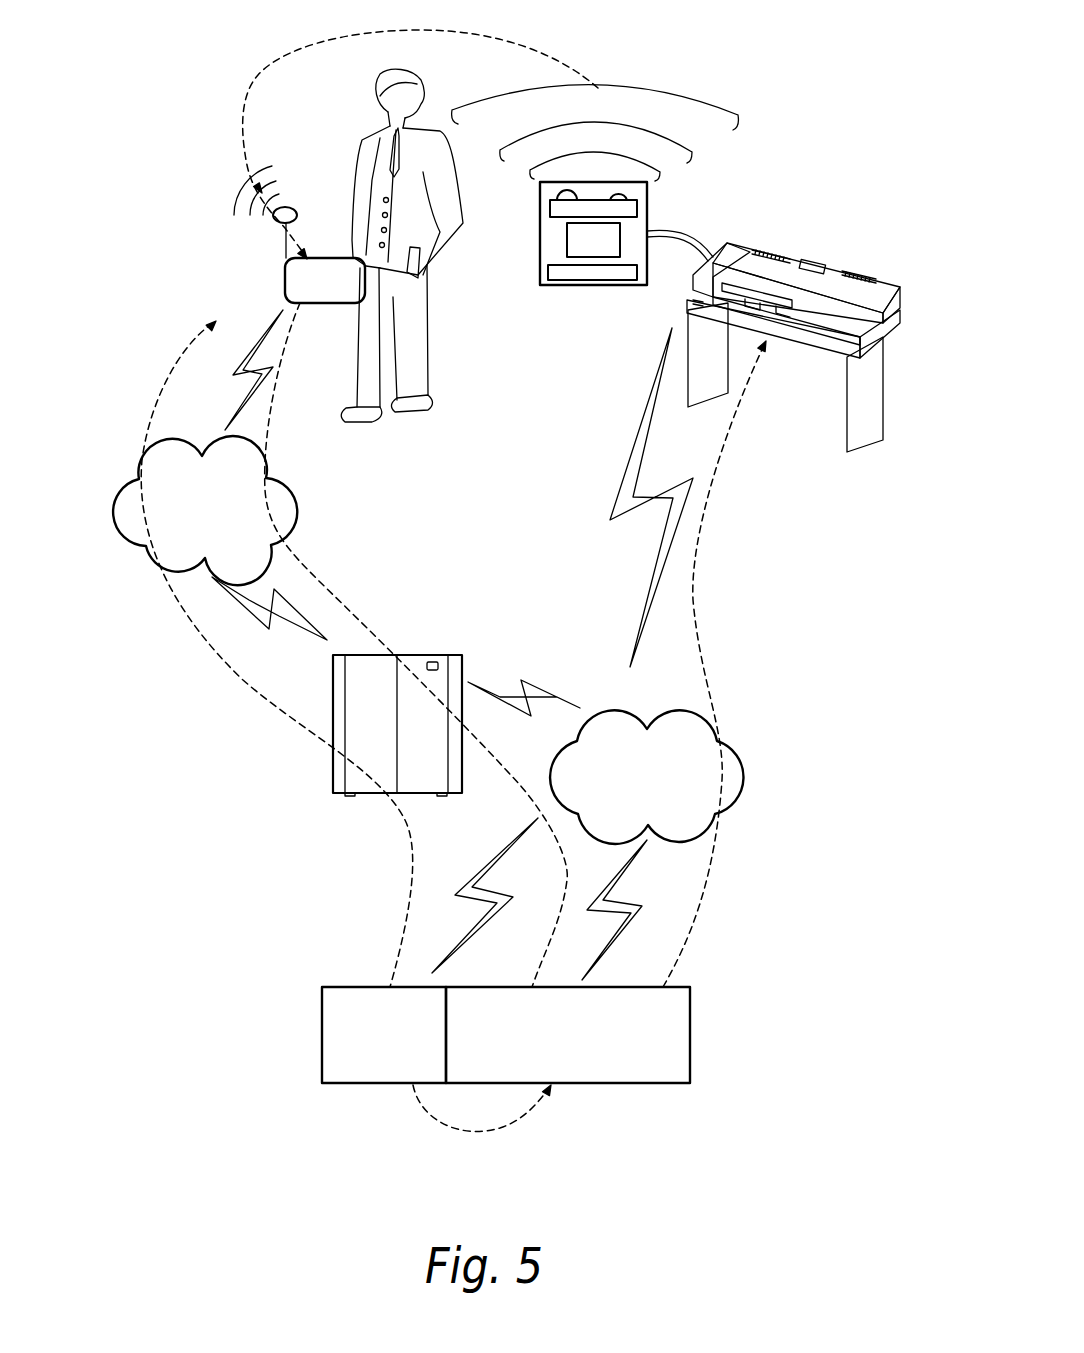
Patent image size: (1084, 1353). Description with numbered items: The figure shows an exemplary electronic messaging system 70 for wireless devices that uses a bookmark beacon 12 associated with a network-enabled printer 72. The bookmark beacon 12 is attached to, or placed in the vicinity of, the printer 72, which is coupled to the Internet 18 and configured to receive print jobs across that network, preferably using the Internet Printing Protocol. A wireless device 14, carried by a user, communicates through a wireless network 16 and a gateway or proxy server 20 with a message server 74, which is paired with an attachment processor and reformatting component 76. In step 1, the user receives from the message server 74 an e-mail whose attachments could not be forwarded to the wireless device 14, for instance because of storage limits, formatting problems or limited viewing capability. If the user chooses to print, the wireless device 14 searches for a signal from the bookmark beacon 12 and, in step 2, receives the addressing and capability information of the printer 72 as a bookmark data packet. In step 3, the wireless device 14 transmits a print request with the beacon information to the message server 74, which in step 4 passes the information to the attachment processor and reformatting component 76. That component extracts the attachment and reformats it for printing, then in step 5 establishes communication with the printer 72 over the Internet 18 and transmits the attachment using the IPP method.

The electronic messaging system 70 is at (803, 86).
The bookmark beacon 12 is at (593, 285).
The wireless device 14 is at (285, 280).
The wireless network 16 is at (138, 467).
The Internet 18 is at (745, 776).
The gateway or proxy server 20 is at (431, 655).
The network-enabled printer 72 is at (880, 290).
The message server 74 is at (355, 987).
The attachment processor and reformatting component 76 is at (690, 1040).
The step 1 is at (276, 654).
The step 2 is at (395, 144).
The step 3 is at (416, 645).
The step 4 is at (482, 1135).
The step 5 is at (714, 664).